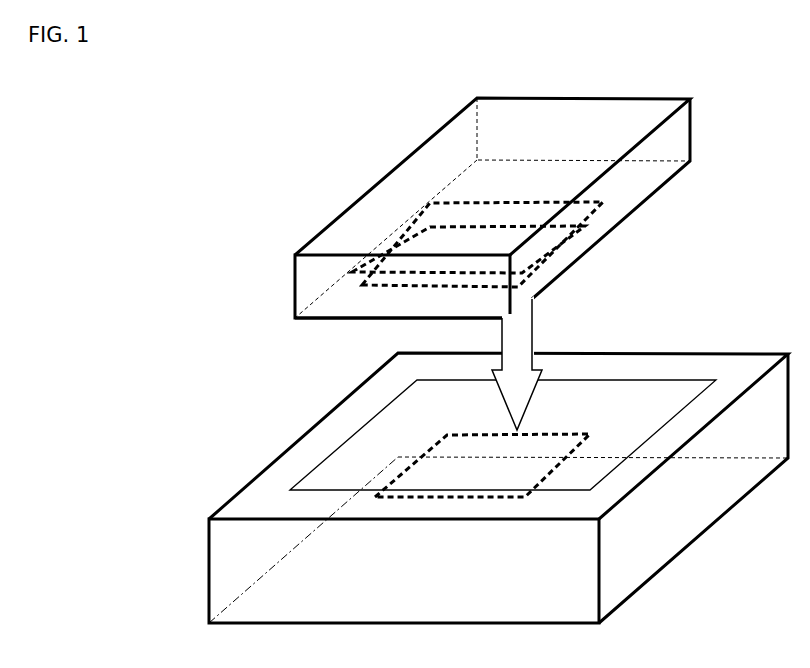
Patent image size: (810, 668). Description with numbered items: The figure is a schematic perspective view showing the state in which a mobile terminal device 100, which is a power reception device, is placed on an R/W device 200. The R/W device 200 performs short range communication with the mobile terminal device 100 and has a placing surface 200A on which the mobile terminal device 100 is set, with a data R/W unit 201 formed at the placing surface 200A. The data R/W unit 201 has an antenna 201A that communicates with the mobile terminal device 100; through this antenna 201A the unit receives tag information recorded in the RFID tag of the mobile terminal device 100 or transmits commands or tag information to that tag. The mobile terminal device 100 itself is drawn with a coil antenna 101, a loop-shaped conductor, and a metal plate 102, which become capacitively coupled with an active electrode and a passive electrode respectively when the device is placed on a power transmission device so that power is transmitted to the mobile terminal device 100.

The mobile terminal device 100 is at (488, 192).
The coil antenna 101 is at (523, 287).
The metal plate 102 is at (352, 272).
The R/W device 200 is at (475, 478).
The placing surface 200A is at (248, 496).
The data reader/writer unit 201 is at (417, 380).
The antenna 201A is at (401, 473).